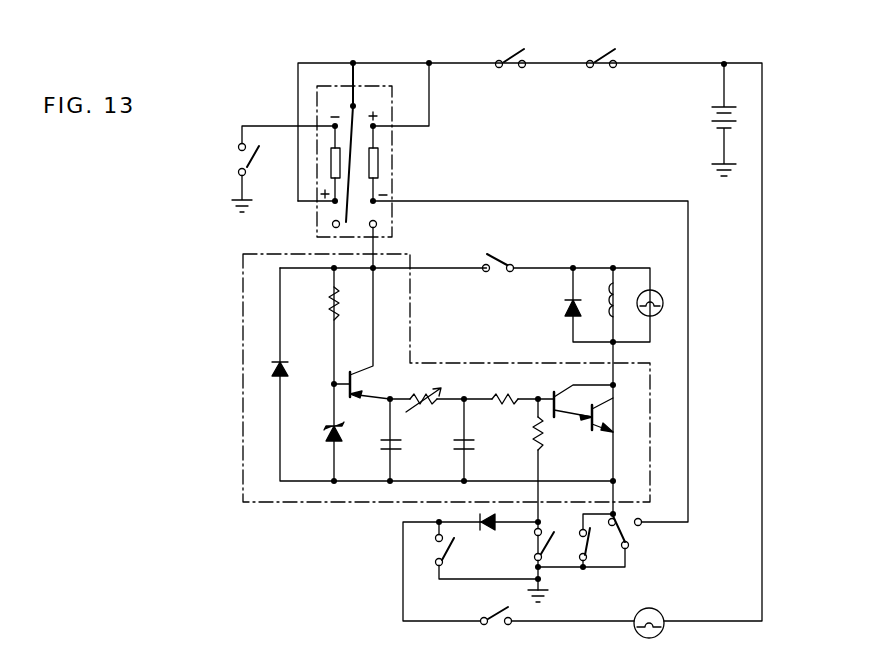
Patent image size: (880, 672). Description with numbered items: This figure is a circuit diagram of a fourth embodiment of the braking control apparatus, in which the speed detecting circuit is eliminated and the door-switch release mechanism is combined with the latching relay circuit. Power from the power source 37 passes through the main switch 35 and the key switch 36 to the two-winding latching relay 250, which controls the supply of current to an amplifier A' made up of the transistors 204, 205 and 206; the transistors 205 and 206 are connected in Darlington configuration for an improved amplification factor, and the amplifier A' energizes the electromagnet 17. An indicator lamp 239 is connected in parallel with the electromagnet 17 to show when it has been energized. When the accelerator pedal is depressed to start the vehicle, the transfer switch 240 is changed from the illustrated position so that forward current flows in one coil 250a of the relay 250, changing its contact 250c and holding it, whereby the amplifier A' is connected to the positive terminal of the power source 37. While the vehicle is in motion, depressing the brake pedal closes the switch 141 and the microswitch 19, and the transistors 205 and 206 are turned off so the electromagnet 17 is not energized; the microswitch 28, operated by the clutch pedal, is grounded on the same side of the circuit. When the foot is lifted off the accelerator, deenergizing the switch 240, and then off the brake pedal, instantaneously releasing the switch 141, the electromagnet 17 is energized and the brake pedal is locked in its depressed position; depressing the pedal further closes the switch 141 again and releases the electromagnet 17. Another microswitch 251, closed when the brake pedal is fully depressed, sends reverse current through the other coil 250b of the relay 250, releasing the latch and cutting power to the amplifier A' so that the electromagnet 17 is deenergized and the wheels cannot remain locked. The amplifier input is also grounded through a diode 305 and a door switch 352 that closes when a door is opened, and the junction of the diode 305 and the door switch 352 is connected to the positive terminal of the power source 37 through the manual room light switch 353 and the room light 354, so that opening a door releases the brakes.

The main switch 35 is at (513, 48).
The key switch 36 is at (601, 48).
The power source 37 is at (711, 117).
The microswitch 251 is at (247, 158).
The two-winding latching relay 250 is at (393, 140).
The coil 250a is at (378, 167).
The coil 250b is at (332, 172).
The contact 250c is at (350, 212).
The microswitch 19 is at (497, 255).
The electromagnet 17 is at (607, 300).
The indicator lamp 239 is at (650, 290).
The transistor 204 is at (365, 384).
The transistor 205 is at (554, 397).
The transistor 206 is at (595, 432).
The door switch 352 is at (441, 551).
The diode 305 is at (484, 529).
The manual room light switch 353 is at (497, 608).
The switch 141 is at (548, 548).
The microswitch 28 is at (587, 547).
The transfer switch 240 is at (630, 537).
The room light 354 is at (646, 608).
The amplifier A' is at (446, 378).